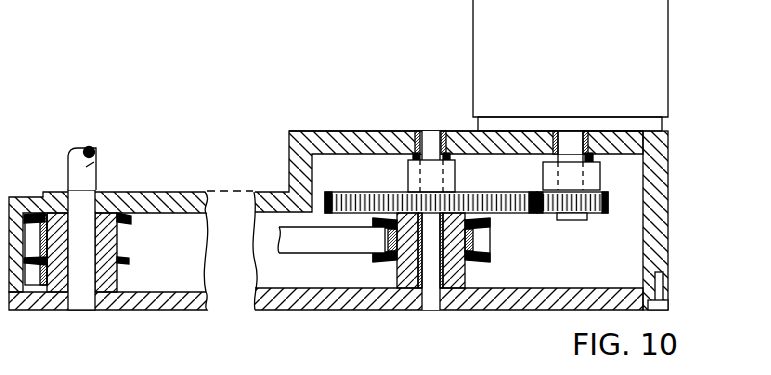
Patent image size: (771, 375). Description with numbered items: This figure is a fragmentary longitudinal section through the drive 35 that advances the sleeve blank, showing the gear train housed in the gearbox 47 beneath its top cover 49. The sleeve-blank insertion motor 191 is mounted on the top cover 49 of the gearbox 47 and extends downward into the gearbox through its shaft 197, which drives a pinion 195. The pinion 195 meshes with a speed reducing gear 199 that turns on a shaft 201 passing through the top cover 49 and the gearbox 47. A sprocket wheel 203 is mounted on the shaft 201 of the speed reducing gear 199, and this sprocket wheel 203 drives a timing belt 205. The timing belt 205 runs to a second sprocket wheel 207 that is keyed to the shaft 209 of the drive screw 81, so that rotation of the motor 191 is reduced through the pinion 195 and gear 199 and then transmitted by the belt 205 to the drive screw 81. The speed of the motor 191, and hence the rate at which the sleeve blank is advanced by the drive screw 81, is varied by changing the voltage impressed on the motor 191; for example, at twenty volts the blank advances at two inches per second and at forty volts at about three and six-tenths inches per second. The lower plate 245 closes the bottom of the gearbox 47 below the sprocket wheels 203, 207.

The drive screw 81 is at (93, 153).
The sleeve-blank insertion motor 191 is at (660, 44).
The top cover 49 is at (660, 146).
The drive 35 is at (491, 213).
The pinion 195 is at (608, 203).
The shaft 197 is at (573, 220).
The speed reducing gear 199 is at (470, 192).
The gearbox 47 is at (663, 260).
The sprocket wheel 207 is at (107, 272).
The timing belt 205 is at (315, 248).
The sprocket wheel 203 is at (417, 270).
The shaft 201 is at (430, 273).
The shaft 209 is at (82, 300).
The base plate 245 is at (518, 300).